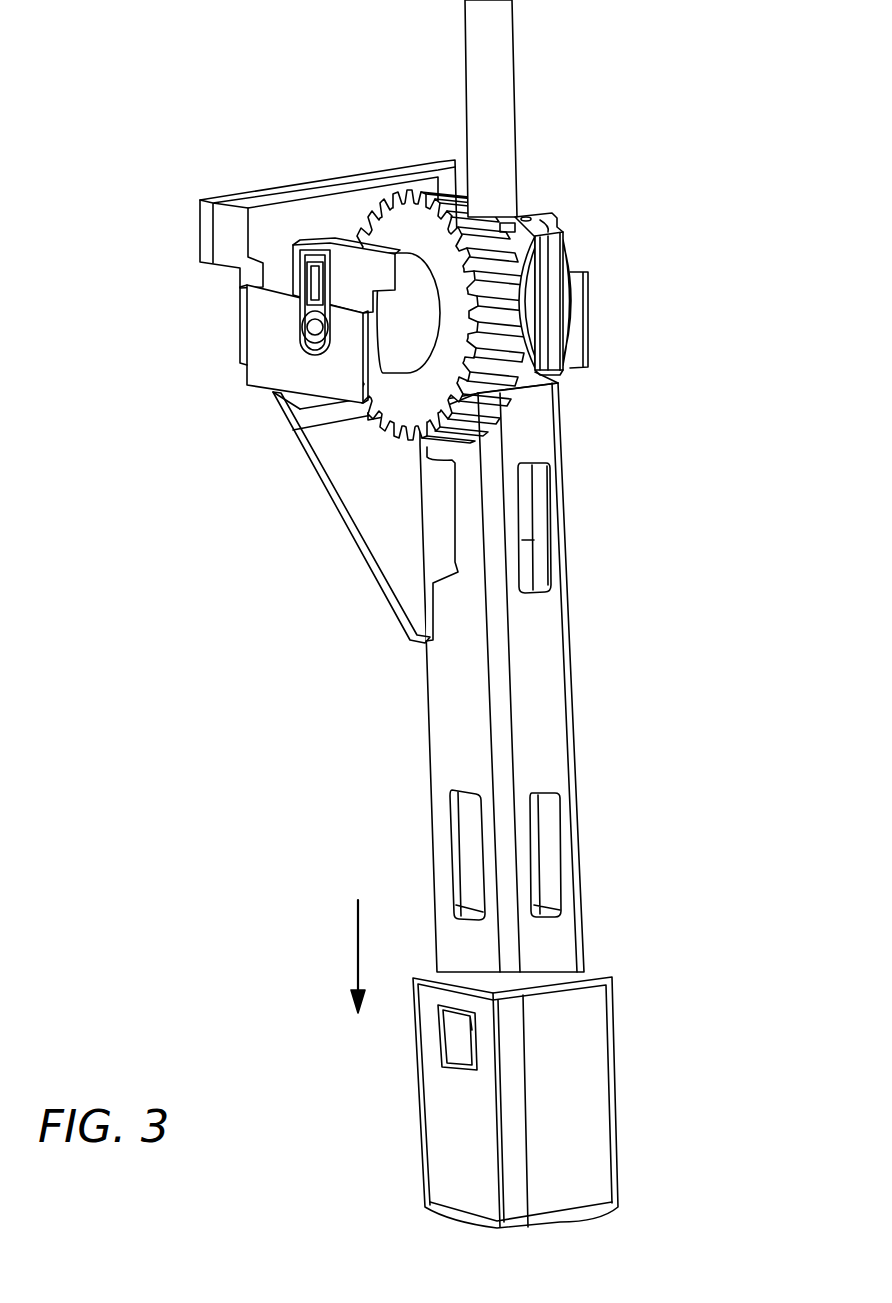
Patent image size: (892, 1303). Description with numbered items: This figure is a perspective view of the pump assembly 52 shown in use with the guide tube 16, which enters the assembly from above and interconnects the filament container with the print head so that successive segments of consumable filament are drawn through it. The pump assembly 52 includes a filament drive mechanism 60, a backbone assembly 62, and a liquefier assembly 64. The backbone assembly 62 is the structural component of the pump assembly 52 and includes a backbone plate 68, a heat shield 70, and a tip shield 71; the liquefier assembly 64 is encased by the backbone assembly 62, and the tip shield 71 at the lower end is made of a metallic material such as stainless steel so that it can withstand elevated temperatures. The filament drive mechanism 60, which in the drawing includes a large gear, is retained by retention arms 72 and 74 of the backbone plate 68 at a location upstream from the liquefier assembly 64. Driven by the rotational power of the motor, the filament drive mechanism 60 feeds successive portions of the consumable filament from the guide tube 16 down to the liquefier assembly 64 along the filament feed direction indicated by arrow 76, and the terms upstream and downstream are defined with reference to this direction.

The guide tube 16 is at (510, 53).
The pump assembly 52 is at (146, 637).
The filament drive mechanism 60 is at (460, 221).
The backbone assembly 62 is at (539, 677).
The liquefier assembly 64 is at (540, 870).
The backbone plate 68 is at (360, 550).
The heat shield 70 is at (560, 727).
The tip shield 71 is at (600, 1110).
The retention arm 72 is at (335, 391).
The retention arm 74 is at (590, 362).
The arrow 76 is at (357, 933).